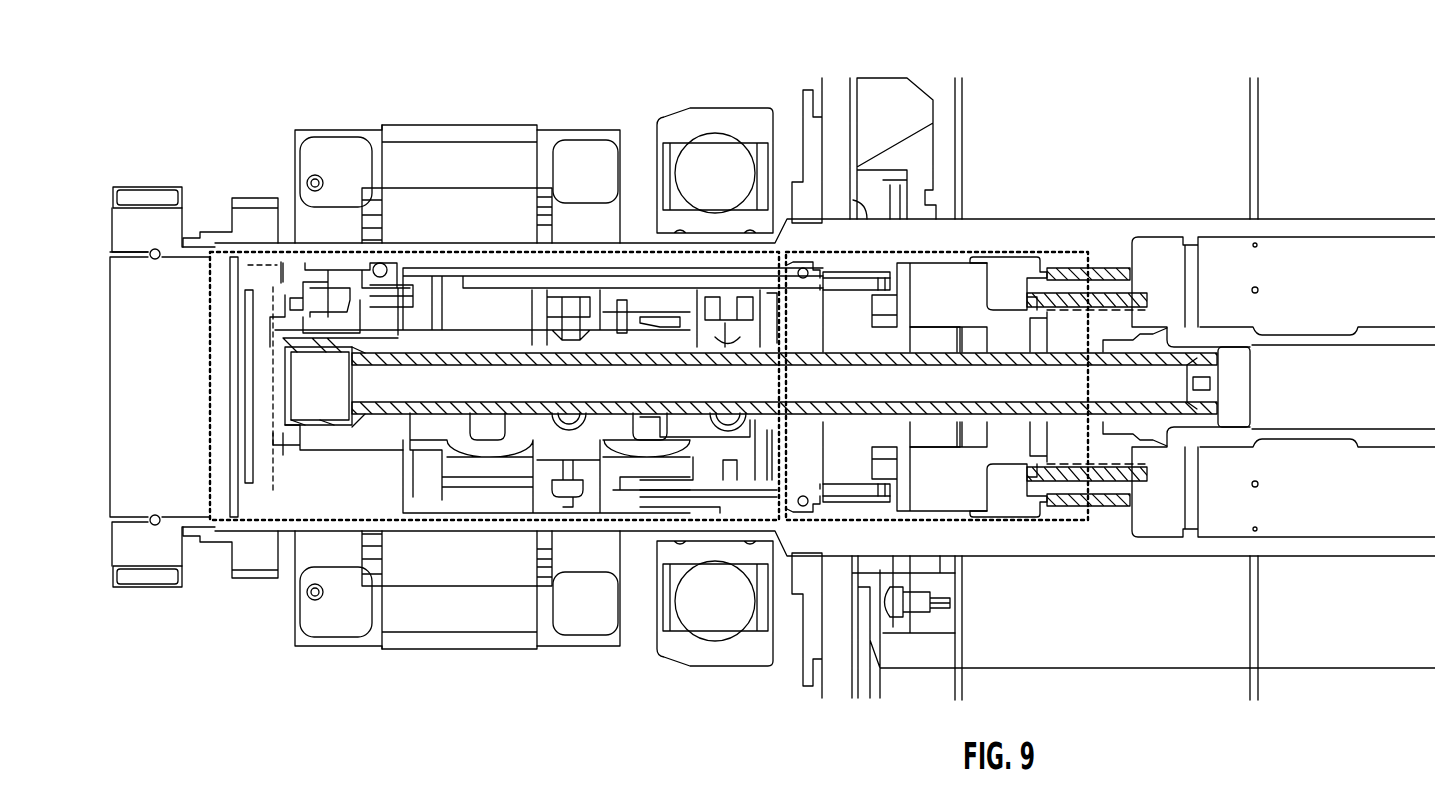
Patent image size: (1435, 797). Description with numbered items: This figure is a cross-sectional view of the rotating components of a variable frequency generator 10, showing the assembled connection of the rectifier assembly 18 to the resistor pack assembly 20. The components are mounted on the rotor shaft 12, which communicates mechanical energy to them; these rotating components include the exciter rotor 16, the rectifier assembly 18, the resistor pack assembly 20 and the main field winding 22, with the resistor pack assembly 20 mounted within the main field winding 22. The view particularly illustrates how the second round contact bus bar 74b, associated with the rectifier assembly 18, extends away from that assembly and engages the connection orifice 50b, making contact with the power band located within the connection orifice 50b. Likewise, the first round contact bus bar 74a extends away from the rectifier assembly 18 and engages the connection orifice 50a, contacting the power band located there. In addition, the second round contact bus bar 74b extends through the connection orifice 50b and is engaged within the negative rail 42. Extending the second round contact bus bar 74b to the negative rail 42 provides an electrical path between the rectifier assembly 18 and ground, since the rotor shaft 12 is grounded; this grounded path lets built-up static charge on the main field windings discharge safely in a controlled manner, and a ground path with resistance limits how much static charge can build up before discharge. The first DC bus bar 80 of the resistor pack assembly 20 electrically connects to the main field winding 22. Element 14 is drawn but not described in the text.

The generator 10 is at (331, 74).
The rotor shaft 12 is at (108, 338).
The end cap 14 is at (141, 186).
The exciter rotor 16 is at (295, 129).
The rectifier assembly 18 is at (210, 338).
The resistor pack assembly 20 is at (966, 366).
The main field winding 22 is at (1031, 96).
The negative rail 42 is at (974, 285).
The connection orifice 50a is at (840, 273).
The connection orifice 50b is at (975, 487).
The first round contact bus bar 74a is at (868, 280).
The second round contact bus bar 74b is at (853, 487).
The first DC bus bar 80 is at (922, 560).